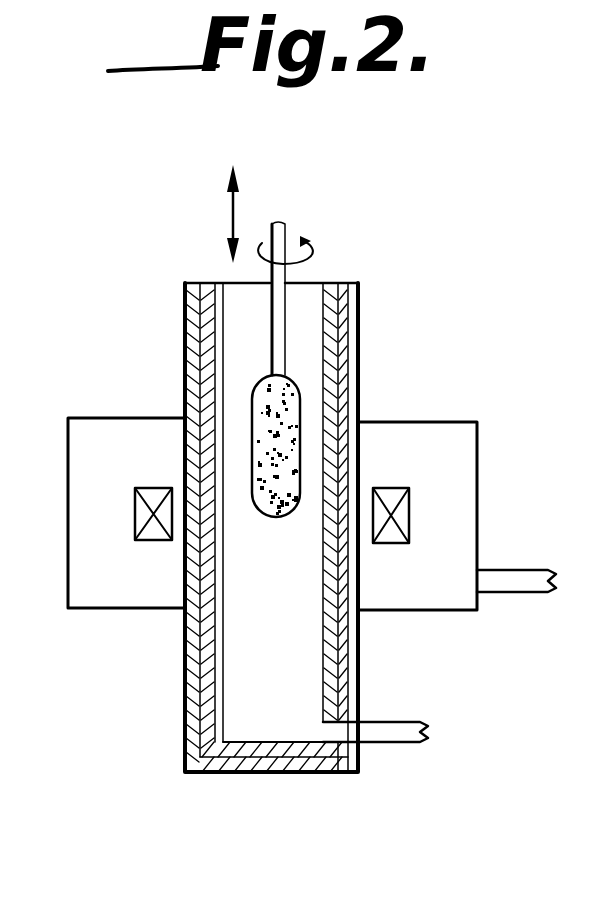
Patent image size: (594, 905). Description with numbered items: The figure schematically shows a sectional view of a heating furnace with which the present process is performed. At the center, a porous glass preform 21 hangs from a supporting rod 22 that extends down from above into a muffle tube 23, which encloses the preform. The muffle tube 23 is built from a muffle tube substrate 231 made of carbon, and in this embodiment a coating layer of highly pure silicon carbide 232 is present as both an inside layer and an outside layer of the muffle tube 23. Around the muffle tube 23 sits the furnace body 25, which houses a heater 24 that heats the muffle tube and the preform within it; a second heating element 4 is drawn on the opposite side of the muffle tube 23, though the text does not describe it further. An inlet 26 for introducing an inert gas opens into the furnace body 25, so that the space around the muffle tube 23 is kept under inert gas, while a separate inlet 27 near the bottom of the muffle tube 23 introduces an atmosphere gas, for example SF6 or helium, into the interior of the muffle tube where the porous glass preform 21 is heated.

The heating coil 4 is at (157, 488).
The porous glass preform 21 is at (289, 436).
The supporting rod 22 is at (281, 229).
The muffle tube 23 is at (327, 508).
The muffle tube substrate 231 is at (363, 313).
The coating layer of highly pure silicon carbide 232 is at (353, 373).
The heater 24 is at (388, 489).
The furnace body 25 is at (478, 443).
The inlet for introducing an inert gas 26 is at (513, 590).
The inlet for introducing an atmosphere gas 27 is at (392, 735).